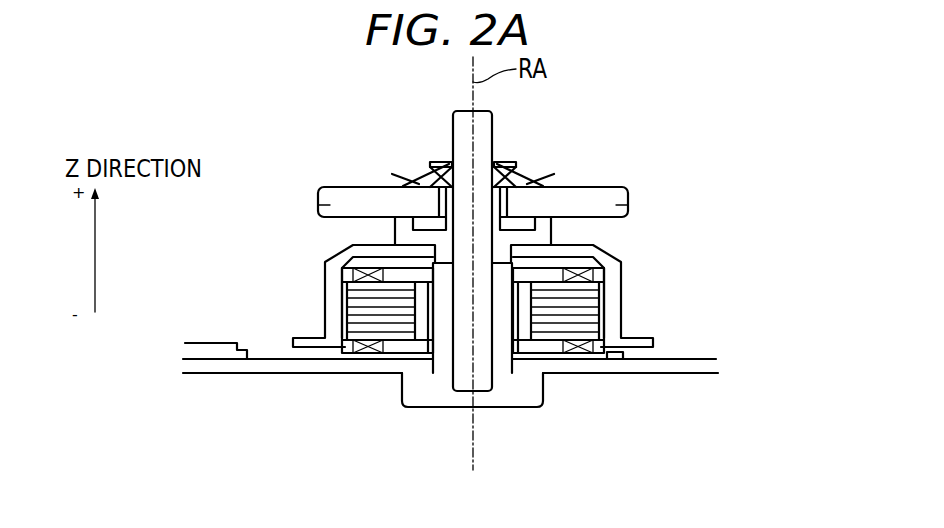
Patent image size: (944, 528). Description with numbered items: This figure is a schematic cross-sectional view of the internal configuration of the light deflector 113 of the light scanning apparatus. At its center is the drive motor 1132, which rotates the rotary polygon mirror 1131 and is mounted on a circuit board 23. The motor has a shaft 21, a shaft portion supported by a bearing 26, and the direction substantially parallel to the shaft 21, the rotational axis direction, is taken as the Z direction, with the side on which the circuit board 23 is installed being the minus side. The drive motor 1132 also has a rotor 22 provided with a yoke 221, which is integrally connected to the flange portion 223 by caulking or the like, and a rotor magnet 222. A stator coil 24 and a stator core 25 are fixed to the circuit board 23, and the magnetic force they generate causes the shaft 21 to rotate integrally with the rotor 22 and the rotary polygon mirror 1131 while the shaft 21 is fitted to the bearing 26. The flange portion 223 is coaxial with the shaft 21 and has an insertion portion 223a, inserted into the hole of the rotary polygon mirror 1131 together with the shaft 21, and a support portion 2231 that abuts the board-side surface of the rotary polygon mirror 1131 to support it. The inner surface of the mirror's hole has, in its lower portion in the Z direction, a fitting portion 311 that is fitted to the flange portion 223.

The light deflector 113 is at (560, 100).
The rotary polygon mirror 1131 is at (340, 190).
The drive motor 1132 is at (772, 93).
The shaft 21 is at (482, 143).
The rotor 22 is at (700, 226).
The yoke 221 is at (622, 320).
The rotor magnet 222 is at (612, 292).
The flange portion 223 is at (545, 222).
The insertion portion 223a is at (430, 187).
The support portion 2231 is at (403, 216).
The fitting portion 311 is at (400, 207).
The circuit board 23 is at (694, 368).
The stator coil 24 is at (583, 343).
The stator core 25 is at (597, 325).
The bearing 26 is at (530, 398).